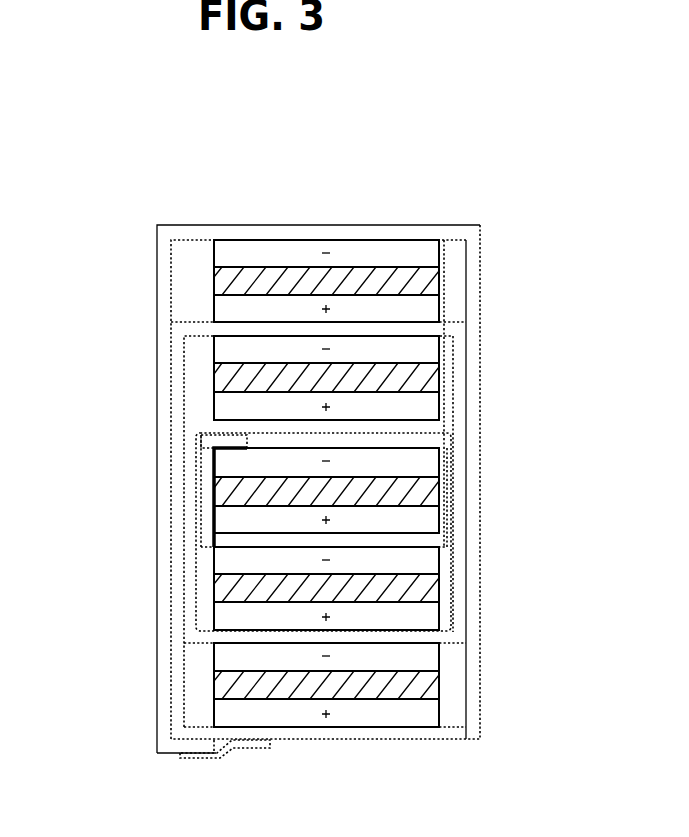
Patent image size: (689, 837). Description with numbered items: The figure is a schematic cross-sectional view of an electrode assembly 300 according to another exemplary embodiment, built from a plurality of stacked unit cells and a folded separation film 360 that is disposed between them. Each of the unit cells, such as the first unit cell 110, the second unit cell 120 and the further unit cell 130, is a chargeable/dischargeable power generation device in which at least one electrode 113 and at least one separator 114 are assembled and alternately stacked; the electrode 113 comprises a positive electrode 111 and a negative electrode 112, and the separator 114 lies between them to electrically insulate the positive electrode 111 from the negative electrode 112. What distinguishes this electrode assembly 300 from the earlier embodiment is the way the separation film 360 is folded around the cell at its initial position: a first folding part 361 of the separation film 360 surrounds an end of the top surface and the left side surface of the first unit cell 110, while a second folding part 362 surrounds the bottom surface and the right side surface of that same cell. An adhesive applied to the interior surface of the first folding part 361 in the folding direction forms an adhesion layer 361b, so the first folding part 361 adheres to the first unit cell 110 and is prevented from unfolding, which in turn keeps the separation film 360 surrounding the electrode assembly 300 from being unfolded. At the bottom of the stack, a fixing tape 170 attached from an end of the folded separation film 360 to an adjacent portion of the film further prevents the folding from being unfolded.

The electrode assembly 300 is at (557, 152).
The first unit cell 110 is at (291, 540).
The positive electrode 111 is at (223, 514).
The negative electrode 112 is at (217, 462).
The electrode 113 is at (240, 547).
The separator 114 is at (253, 500).
The second unit cell 120 is at (444, 588).
The unit cell 130 is at (444, 350).
The fixing tape 170 is at (255, 749).
The separation film 360 is at (482, 687).
The first folding part 361 is at (203, 455).
The adhesion layer 361b is at (207, 434).
The second folding part 362 is at (448, 525).